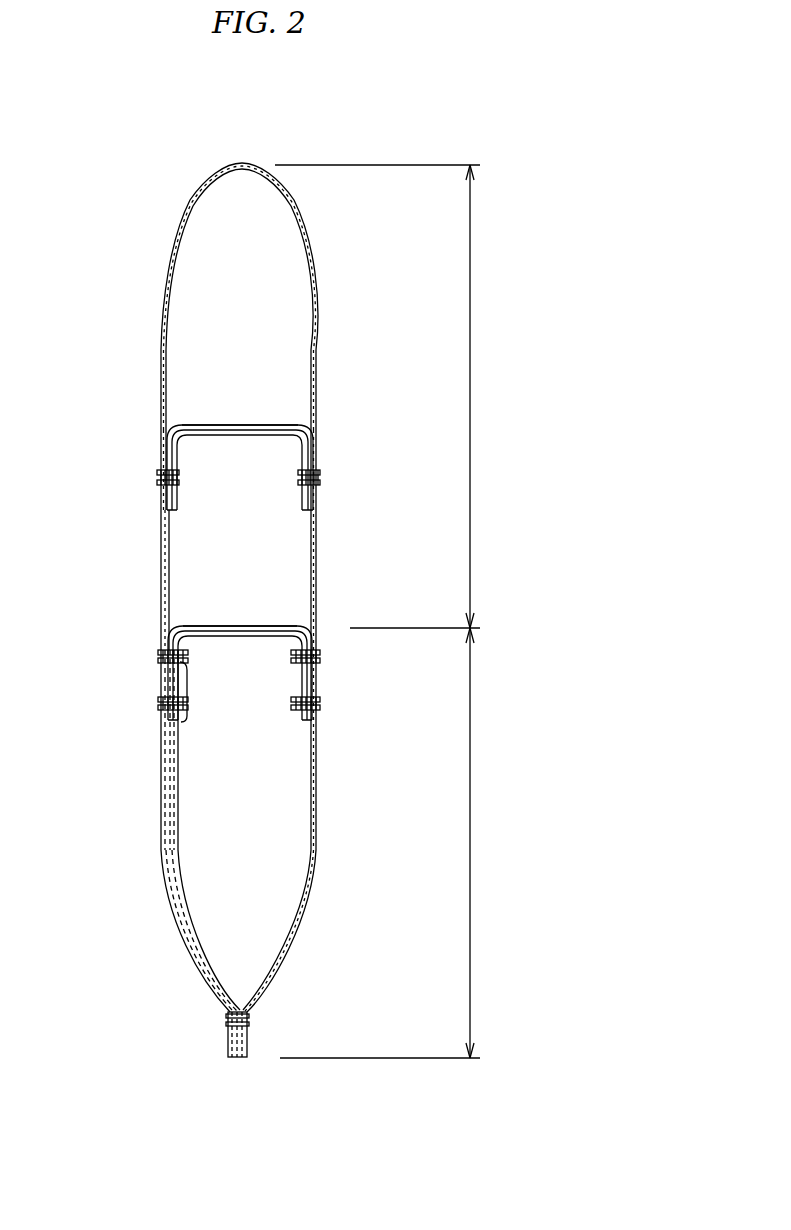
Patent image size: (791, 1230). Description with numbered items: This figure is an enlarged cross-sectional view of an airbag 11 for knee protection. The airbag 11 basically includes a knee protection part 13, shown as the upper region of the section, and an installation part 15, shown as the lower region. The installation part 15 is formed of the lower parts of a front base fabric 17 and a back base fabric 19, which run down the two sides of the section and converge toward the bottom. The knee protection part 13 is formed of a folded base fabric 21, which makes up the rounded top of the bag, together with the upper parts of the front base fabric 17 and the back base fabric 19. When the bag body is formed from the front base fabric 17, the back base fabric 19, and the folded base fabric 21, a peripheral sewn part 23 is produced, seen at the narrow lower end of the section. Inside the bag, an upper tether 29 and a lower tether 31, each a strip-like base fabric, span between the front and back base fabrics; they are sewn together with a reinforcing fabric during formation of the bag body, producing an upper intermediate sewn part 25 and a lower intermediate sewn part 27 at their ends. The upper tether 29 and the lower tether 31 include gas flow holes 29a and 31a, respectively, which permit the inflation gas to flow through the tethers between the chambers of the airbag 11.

The airbag 11 is at (252, 127).
The knee protection part 13 is at (393, 396).
The installation part 15 is at (394, 843).
The front base fabric 17 is at (316, 800).
The back base fabric 19 is at (162, 798).
The folded base fabric 21 is at (316, 278).
The peripheral sewn part 23 is at (248, 1018).
The upper intermediate sewn part 25 is at (318, 475).
The lower intermediate sewn part 27 is at (318, 660).
The upper tether 29 is at (314, 440).
The gas flow hole 29a is at (238, 424).
The lower tether 31 is at (318, 700).
The gas flow hole 31a is at (238, 626).